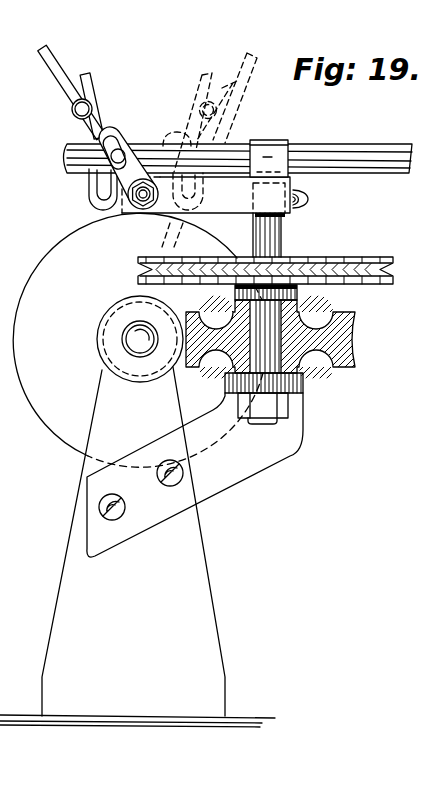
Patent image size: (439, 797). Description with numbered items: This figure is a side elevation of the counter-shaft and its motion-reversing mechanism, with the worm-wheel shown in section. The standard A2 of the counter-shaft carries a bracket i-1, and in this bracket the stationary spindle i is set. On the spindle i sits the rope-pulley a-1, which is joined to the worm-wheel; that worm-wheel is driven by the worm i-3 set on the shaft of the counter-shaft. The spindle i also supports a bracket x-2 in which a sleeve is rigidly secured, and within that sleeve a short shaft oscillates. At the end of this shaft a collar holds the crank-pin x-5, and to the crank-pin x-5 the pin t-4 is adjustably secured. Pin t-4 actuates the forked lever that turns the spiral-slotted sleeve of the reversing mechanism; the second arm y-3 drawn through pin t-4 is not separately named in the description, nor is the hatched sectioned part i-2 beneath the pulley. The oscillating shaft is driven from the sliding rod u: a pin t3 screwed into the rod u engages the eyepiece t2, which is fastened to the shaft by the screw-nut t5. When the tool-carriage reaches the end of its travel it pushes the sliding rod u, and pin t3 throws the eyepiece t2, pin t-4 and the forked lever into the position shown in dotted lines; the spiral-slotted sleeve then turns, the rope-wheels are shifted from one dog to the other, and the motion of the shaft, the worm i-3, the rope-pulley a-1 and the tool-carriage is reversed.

The crank-pin x-5 is at (50, 71).
The rod y-3 is at (91, 88).
The pin t-4 is at (92, 109).
The eyepiece t2 is at (118, 138).
The pin t3 is at (114, 157).
The screw-nut t5 is at (129, 202).
The sliding rod u is at (329, 148).
The bracket x-2 is at (215, 195).
The stationary spindle i is at (280, 231).
The rope-pulley a-1 is at (332, 263).
The worm i-3 is at (98, 336).
The cross block i-2 is at (348, 345).
The bracket i-1 is at (195, 475).
The standard A2 is at (133, 541).